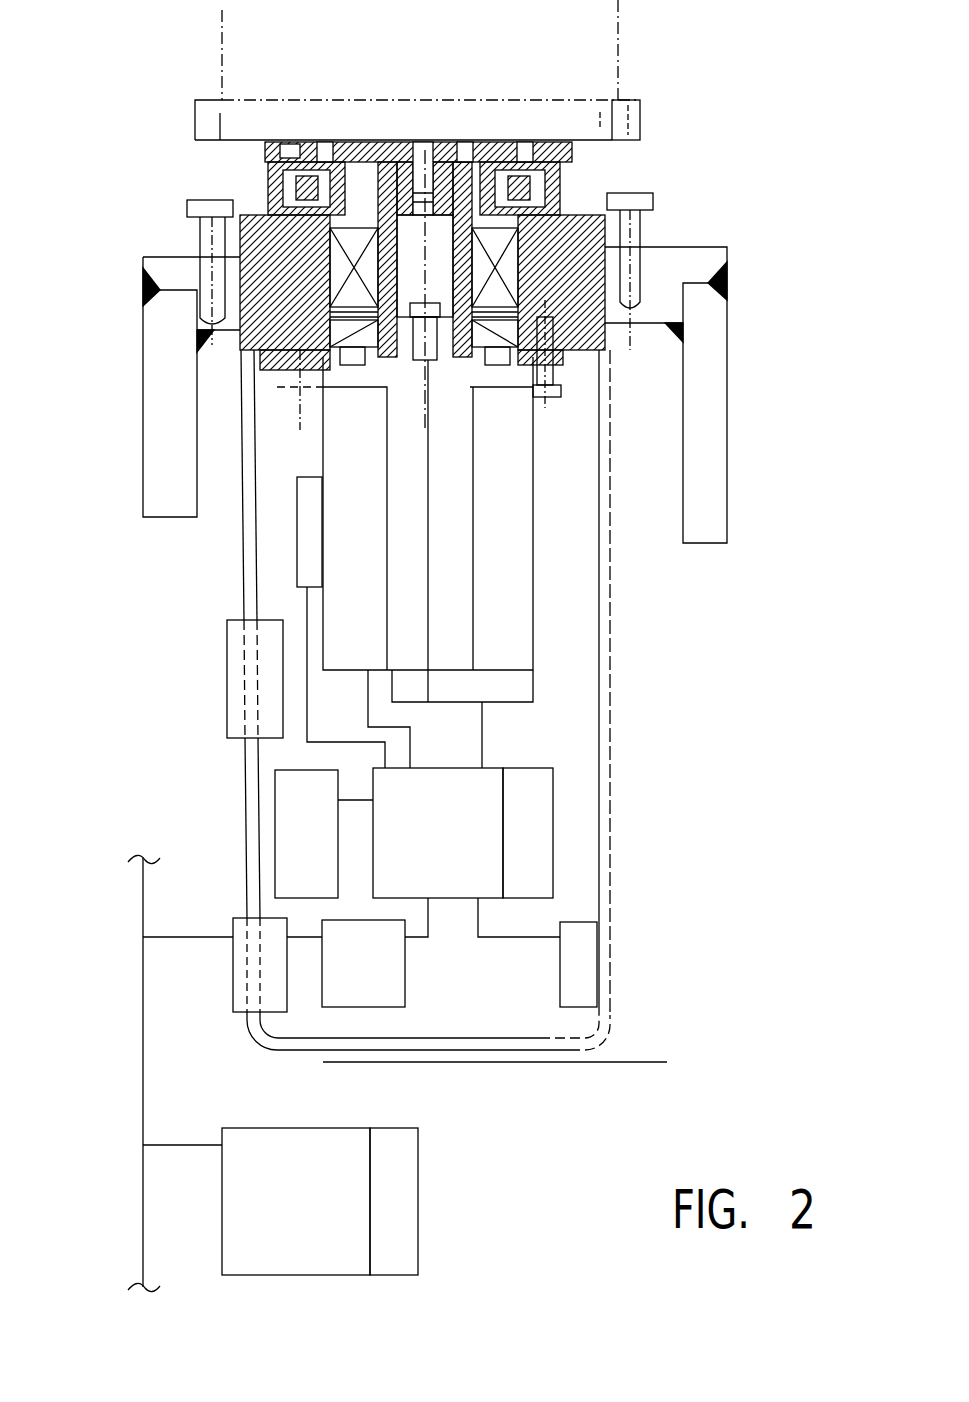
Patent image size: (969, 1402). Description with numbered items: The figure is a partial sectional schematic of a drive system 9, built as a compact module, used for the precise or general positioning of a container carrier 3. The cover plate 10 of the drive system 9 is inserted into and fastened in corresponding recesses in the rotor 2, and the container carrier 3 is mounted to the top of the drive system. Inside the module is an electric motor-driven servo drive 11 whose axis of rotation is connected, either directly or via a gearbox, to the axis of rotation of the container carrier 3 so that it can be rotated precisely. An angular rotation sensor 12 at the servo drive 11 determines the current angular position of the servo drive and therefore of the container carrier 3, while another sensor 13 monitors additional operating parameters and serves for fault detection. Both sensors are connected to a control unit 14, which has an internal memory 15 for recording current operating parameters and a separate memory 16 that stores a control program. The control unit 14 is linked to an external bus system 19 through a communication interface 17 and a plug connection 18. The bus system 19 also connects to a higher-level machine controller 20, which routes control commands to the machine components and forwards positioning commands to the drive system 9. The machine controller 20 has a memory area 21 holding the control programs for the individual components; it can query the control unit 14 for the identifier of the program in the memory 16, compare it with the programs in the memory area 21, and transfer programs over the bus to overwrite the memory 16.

The rotor 2 is at (702, 437).
The container carrier 3 is at (570, 110).
The drive system 9 is at (674, 662).
The cover plate 10 is at (585, 215).
The servo drive 11 is at (508, 527).
The angular rotation sensor 12 is at (512, 690).
The sensor 13 is at (305, 530).
The control unit 14 is at (459, 844).
The internal memory 15 is at (538, 835).
The memory 16 is at (290, 822).
The communication interface 17 is at (385, 978).
The plug connection 18 is at (240, 1003).
The bus system 19 is at (140, 1052).
The machine controller 20 is at (320, 1218).
The memory area 21 is at (402, 1157).